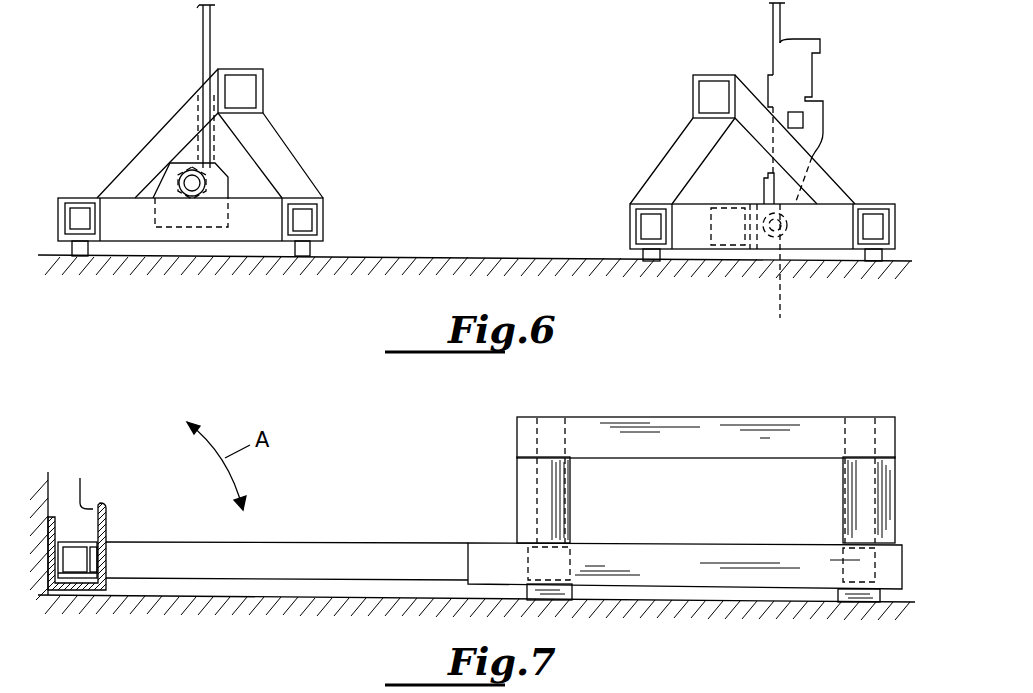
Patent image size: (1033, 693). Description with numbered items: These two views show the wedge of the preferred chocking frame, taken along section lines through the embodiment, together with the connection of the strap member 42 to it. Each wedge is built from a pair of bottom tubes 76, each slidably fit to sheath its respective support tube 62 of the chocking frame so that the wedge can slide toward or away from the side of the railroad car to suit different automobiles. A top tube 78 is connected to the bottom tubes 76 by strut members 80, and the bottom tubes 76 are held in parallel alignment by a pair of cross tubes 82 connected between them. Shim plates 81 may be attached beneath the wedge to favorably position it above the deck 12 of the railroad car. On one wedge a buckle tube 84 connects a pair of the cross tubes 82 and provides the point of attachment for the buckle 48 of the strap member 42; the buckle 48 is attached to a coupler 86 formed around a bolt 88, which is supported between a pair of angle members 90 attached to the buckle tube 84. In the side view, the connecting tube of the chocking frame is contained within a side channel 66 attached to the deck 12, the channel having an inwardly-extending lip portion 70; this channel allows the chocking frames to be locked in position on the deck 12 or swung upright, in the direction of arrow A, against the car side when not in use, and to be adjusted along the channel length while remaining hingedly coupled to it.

In FIG. 6, the deck 12 is at (455, 262).
In FIG. 7, the deck 12 is at (252, 597).
In FIG. 6, the strap member 42 is at (208, 43).
In FIG. 6, the buckle 48 is at (817, 115).
In FIG. 6, the support tubes 62 is at (67, 213).
In FIG. 7, the support tubes 62 is at (347, 557).
In FIG. 7, the side channel 66 is at (107, 523).
In FIG. 7, the inwardly-extending lip portion 70 is at (77, 482).
In FIG. 6, the bottom tubes 76 is at (78, 197).
In FIG. 7, the bottom tubes 76 is at (675, 563).
In FIG. 6, the top tube 78 is at (258, 93).
In FIG. 7, the top tube 78 is at (705, 432).
In FIG. 6, the strut members 80 is at (182, 120).
In FIG. 7, the strut members 80 is at (527, 512).
In FIG. 6, the shim plates 81 is at (82, 247).
In FIG. 7, the shim plates 81 is at (560, 596).
In FIG. 6, the cross tubes 82 is at (124, 208).
In FIG. 6, the buckle tube 84 is at (735, 205).
In FIG. 6, the coupler 86 is at (760, 180).
In FIG. 6, the bolt 88 is at (787, 223).
In FIG. 6, the angle members 90 is at (786, 274).